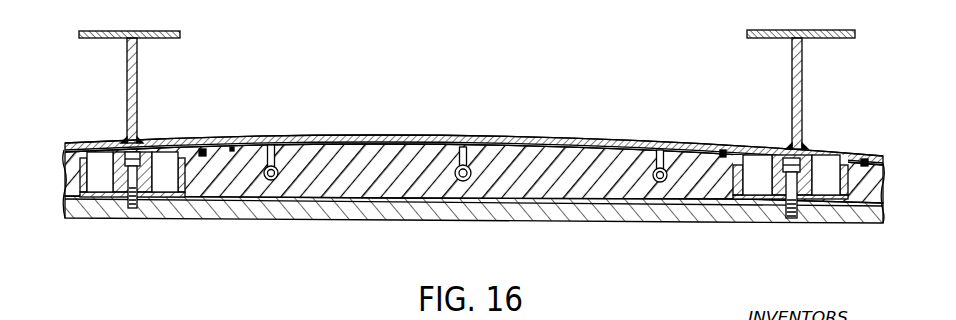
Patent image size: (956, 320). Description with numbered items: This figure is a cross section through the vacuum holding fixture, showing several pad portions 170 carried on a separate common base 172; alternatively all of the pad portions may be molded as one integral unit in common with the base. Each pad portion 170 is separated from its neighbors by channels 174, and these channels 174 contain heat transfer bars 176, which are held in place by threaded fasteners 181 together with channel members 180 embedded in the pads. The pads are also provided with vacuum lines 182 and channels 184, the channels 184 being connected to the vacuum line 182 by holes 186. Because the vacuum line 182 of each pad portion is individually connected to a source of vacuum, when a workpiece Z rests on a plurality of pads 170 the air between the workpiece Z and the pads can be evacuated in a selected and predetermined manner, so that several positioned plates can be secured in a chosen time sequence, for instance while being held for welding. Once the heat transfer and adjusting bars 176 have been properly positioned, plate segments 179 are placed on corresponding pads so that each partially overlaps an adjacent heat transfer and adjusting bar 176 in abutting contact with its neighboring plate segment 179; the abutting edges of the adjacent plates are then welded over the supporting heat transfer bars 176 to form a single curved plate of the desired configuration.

The pad portion 170 is at (417, 163).
The common base 172 is at (622, 216).
The channel 174 is at (833, 157).
The heat transfer bar 176 is at (772, 172).
The plate segment 179 is at (377, 138).
The channel member 180 is at (179, 196).
The threaded fastener 181 is at (798, 220).
The vacuum line 182 is at (274, 181).
The channel 184 is at (312, 146).
The hole 186 is at (280, 151).
The workpiece Z is at (543, 137).